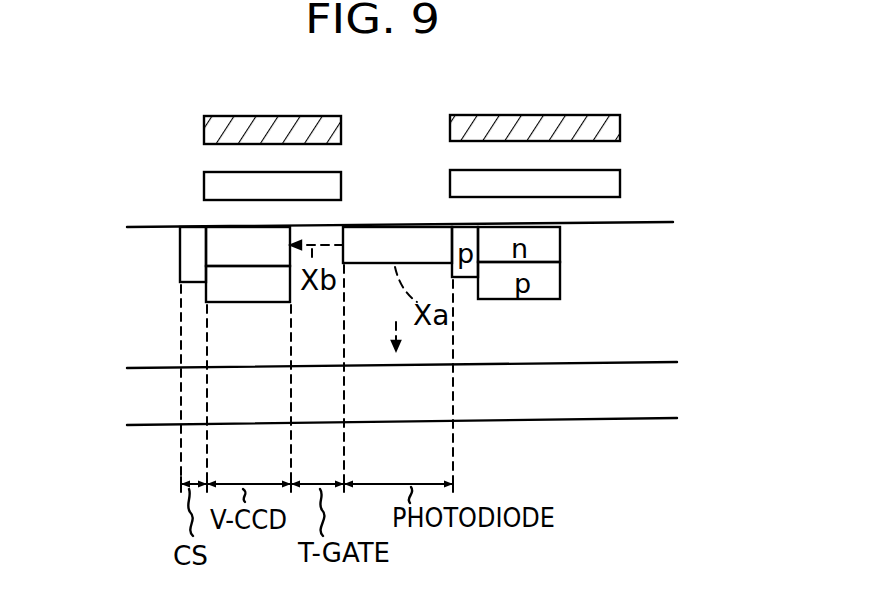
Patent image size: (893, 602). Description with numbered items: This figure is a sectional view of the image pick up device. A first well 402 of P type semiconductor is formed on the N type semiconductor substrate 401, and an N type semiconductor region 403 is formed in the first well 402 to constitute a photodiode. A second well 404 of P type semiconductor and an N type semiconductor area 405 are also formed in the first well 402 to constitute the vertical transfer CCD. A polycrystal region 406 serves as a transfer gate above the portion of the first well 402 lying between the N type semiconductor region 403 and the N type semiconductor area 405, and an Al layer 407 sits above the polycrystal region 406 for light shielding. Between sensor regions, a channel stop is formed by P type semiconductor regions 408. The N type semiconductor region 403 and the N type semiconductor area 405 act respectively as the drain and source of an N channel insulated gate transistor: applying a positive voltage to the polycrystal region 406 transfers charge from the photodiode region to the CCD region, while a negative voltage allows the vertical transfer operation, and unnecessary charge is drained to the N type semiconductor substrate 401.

The N type semiconductor substrate 401 is at (647, 393).
The first well 402 is at (637, 294).
The N type semiconductor region 403 is at (417, 240).
The second well 404 is at (210, 288).
The N type semiconductor area 405 is at (220, 238).
The polycrystal region 406 is at (342, 185).
The Al layer 407 is at (327, 117).
The P type semiconductor regions 408 is at (181, 253).